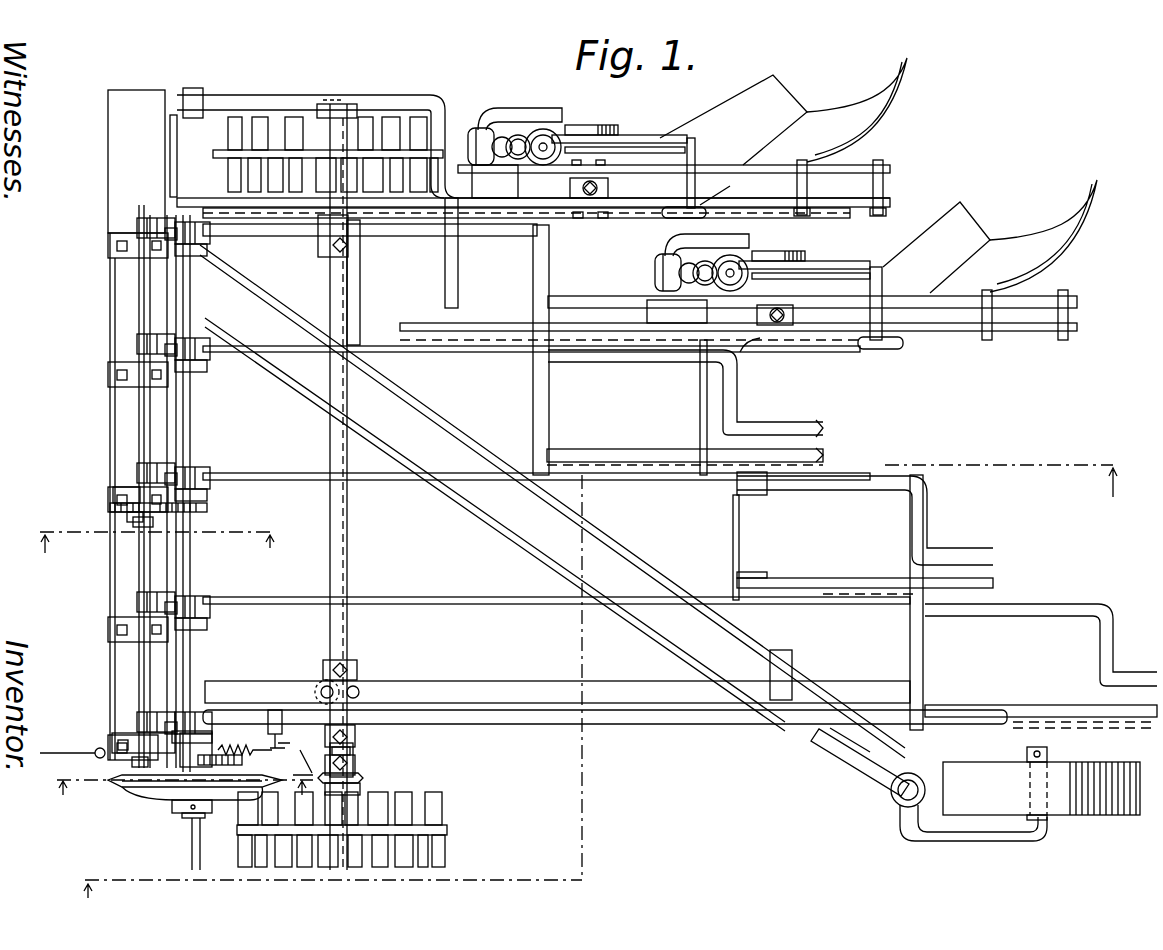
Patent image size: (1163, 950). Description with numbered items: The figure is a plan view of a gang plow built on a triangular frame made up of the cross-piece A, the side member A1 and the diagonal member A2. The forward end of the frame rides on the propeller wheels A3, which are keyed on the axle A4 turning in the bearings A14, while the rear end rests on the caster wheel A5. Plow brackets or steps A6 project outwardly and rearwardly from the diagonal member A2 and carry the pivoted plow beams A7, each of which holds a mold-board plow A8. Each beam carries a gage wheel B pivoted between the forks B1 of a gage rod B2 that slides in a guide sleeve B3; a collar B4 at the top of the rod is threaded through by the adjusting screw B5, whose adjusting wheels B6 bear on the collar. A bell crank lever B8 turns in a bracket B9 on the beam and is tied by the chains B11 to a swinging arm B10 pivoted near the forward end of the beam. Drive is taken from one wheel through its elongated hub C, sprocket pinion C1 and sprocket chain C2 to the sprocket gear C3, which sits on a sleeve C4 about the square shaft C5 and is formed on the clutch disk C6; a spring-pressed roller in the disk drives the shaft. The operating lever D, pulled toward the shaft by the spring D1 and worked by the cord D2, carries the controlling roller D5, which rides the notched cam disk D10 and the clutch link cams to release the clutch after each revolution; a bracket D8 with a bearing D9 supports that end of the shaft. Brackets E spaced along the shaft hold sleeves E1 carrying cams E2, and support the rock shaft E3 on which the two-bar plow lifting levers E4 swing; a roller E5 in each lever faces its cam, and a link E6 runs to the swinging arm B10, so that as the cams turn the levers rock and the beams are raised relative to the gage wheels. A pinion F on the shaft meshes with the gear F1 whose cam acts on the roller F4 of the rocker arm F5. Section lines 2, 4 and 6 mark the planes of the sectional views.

The cross-piece A is at (110, 392).
The side member A1 is at (533, 681).
The diagonal member A2 is at (505, 530).
The propeller wheels A3 is at (292, 150).
The axle A4 is at (347, 558).
The caster wheel A5 is at (975, 784).
The plow brackets or steps A6 is at (347, 280).
The plow beams A7 is at (372, 98).
The mold-board plow A8 is at (818, 118).
The bearings A14 is at (318, 250).
The gage wheel B is at (600, 126).
The forks B1 is at (515, 110).
The gage rod B2 is at (496, 138).
The guide sleeve B3 is at (497, 160).
The collar B4 is at (517, 160).
The adjusting screw B5 is at (550, 140).
The adjusting wheels B6 is at (742, 355).
The bell crank lever B8 is at (703, 210).
The bracket B9 is at (690, 160).
The swinging arm B10 is at (228, 210).
The chains B11 is at (425, 225).
The elongated hub C is at (355, 760).
The sprocket pinion C1 is at (365, 778).
The sprocket chain C2 is at (299, 758).
The sprocket gear C3 is at (162, 800).
The sleeve C4 is at (245, 745).
The square shaft C5 is at (192, 550).
The clutch disk C6 is at (145, 797).
The operating lever D is at (112, 745).
The spring D1 is at (275, 710).
The cord D2 is at (45, 750).
The controlling roller D5 is at (135, 788).
The bracket D8 is at (115, 737).
The bearing D9 is at (212, 745).
The cam disk D10 is at (217, 805).
The brackets E is at (108, 245).
The sleeves E1 is at (200, 245).
The cams E2 is at (180, 222).
The rock shaft E3 is at (139, 422).
The plow lifting levers E4 is at (140, 222).
The roller E5 is at (168, 345).
The link E6 is at (243, 236).
The pinion F is at (207, 508).
The gear F1 is at (113, 500).
The roller F4 is at (128, 520).
The rocker arm F5 is at (140, 527).
The section line 2 is at (599, 675).
The section line 4 is at (182, 806).
The section line 6 is at (152, 535).